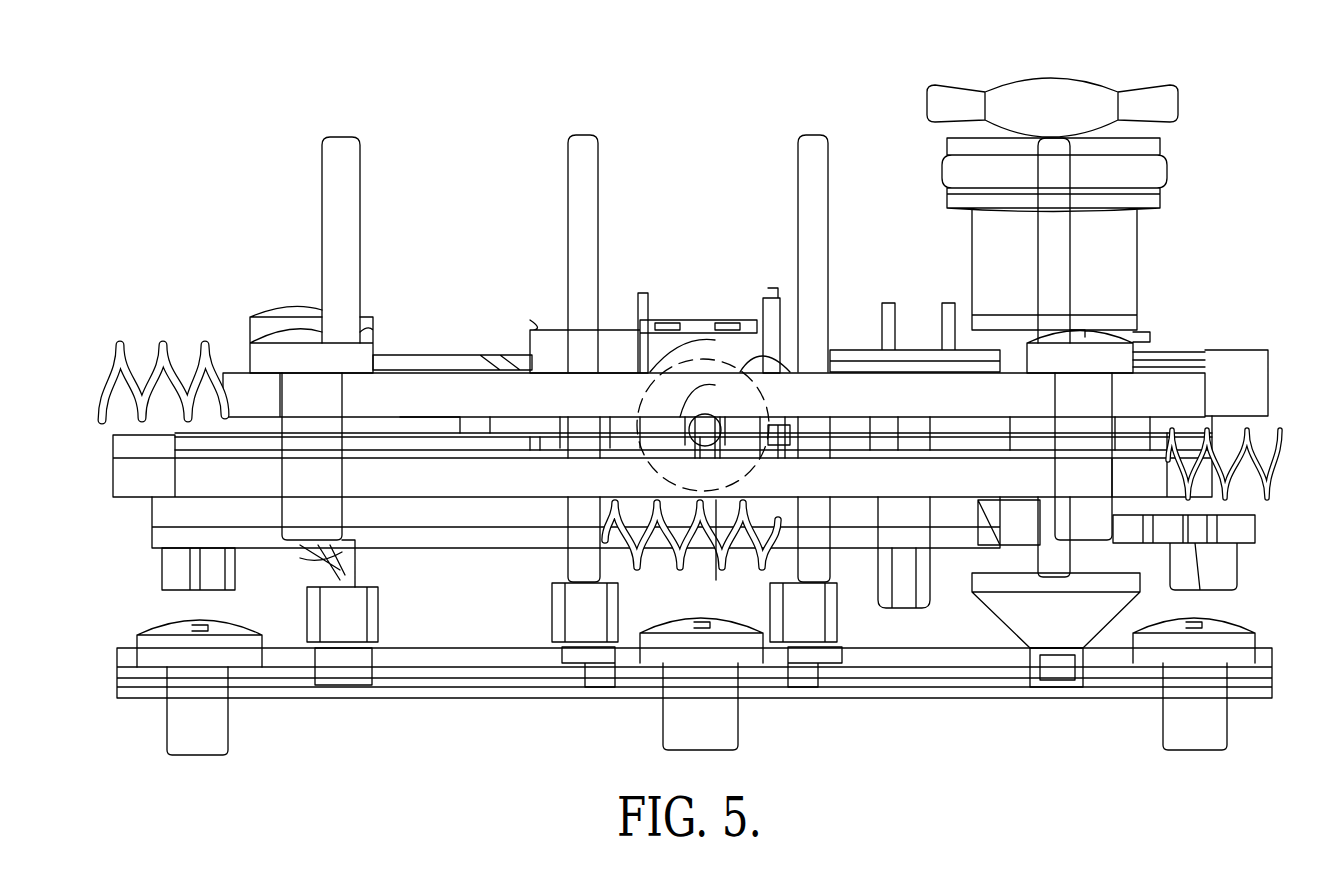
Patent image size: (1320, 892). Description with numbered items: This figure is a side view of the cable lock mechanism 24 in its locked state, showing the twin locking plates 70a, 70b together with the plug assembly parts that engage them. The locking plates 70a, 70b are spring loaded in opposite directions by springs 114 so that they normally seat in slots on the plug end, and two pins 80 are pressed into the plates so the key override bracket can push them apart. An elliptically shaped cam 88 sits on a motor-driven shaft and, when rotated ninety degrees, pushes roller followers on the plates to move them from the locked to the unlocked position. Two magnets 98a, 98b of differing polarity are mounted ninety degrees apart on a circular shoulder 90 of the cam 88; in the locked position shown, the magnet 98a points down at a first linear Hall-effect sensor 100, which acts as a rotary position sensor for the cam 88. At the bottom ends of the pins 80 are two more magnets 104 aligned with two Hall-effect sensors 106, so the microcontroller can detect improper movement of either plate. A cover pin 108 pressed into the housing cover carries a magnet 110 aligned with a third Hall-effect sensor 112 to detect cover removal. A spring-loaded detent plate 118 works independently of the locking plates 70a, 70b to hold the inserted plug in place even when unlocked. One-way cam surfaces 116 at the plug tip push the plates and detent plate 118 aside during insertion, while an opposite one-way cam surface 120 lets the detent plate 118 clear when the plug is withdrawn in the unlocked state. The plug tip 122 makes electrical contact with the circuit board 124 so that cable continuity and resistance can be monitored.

The cable lock mechanism 24 is at (697, 80).
The locking plate 70a is at (466, 409).
The locking plate 70b is at (466, 492).
The pins 80 is at (812, 175).
The elliptically shaped cam 88 is at (705, 335).
The circular shoulder 90 is at (740, 335).
The magnet 98a is at (650, 505).
The magnet 98b is at (770, 440).
The first linear Hall-effect sensor 100 is at (716, 580).
The magnets 104 is at (578, 622).
The Hall-effect sensors 106 is at (575, 663).
The cover pin 108 is at (345, 215).
The magnet 110 is at (355, 617).
The third Hall-effect sensor 112 is at (352, 660).
The springs 114 is at (165, 350).
The one-way cam surfaces 116 is at (1010, 615).
The detent plate 118 is at (1125, 535).
The opposite one-way cam surface 120 is at (982, 555).
The plug tip 122 is at (1050, 660).
The circuit board 124 is at (1065, 660).